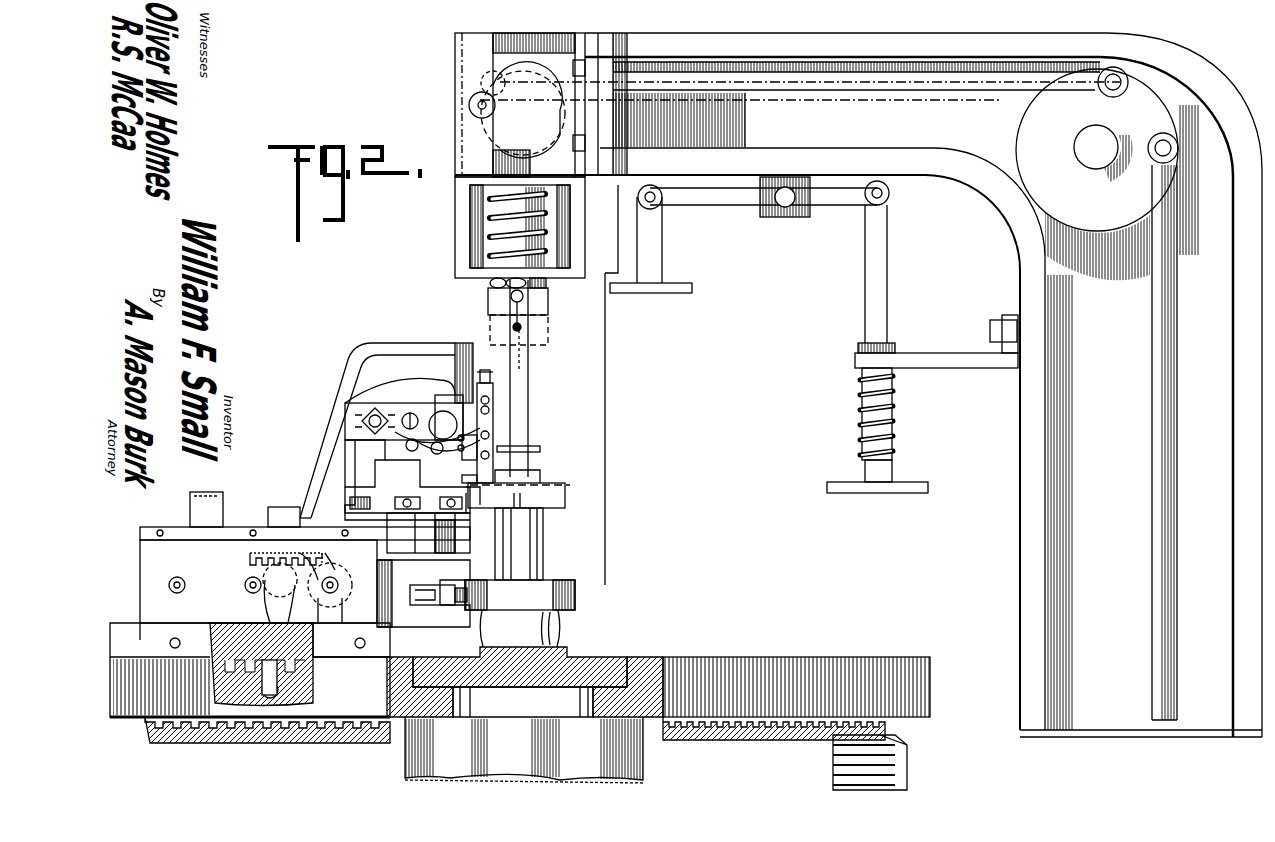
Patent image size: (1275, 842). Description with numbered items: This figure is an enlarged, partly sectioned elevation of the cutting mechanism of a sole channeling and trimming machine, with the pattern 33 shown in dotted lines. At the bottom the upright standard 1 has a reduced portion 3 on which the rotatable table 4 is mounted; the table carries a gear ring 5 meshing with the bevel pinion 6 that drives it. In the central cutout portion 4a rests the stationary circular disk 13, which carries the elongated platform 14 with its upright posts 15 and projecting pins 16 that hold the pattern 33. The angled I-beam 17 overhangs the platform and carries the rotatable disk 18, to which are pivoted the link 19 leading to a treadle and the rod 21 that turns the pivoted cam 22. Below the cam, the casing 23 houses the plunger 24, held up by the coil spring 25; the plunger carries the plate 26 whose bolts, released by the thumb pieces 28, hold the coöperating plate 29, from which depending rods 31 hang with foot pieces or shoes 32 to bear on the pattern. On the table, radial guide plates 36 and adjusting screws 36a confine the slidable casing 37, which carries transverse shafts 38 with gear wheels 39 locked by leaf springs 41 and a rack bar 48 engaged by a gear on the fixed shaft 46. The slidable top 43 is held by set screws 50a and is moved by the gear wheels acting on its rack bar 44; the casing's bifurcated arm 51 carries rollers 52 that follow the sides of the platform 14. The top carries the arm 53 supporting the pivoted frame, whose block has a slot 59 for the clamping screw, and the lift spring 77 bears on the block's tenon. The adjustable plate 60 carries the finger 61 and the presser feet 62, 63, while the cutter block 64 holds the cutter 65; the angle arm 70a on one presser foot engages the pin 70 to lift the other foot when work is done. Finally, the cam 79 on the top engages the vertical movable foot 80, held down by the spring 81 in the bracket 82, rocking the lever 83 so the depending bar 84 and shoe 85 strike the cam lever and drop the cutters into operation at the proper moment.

The upright standard 1 is at (480, 755).
The reduced portion 3 is at (490, 687).
The rotatable table 4 is at (632, 22).
The central cutout portion 4a is at (640, 660).
The gear ring 5 is at (720, 745).
The bevel pinion 6 is at (830, 758).
The circular disk 13 is at (580, 660).
The elongated platform 14 is at (560, 590).
The upright posts 15 is at (525, 540).
The projecting pins 16 is at (520, 497).
The angled I-beam 17 is at (830, 53).
The rotatable disk 18 is at (1022, 140).
The link 19 is at (1173, 330).
The rod 21 is at (835, 90).
The pivoted cam 22 is at (520, 105).
The casing 23 is at (470, 212).
The plunger 24 is at (495, 246).
The coil spring 25 is at (548, 218).
The plate 26 is at (548, 298).
The thumb pieces 28 is at (500, 308).
The coöperating plate 29 is at (548, 315).
The depending rod 31 is at (530, 362).
The foot piece or shoe 32 is at (530, 448).
The pattern 33 is at (560, 482).
The guide plates 36 is at (195, 657).
The adjusting screws 36a is at (160, 640).
The slidable casing 37 is at (258, 581).
The transverse shafts 38 is at (253, 592).
The gear wheel 39 is at (375, 570).
The leaf spring 41 is at (318, 600).
The slidable top 43 is at (190, 540).
The rack bar 44 is at (305, 550).
The fixed shaft 46 is at (290, 690).
The rack bar 48 is at (215, 640).
The set screws 50a is at (255, 530).
The bifurcated arm 51 is at (423, 595).
The rollers 52 is at (435, 598).
The arm 53 is at (342, 415).
The slot 59 is at (385, 400).
The adjustable plate 60 is at (409, 428).
The finger 61 is at (425, 455).
The presser foot 62 is at (445, 400).
The presser foot 63 is at (495, 388).
The cutter block 64 is at (398, 412).
The cutter 65 is at (465, 470).
The pin 70 is at (450, 440).
The angle arm 70a is at (480, 438).
The lift spring 77 is at (352, 468).
The cam 79 is at (205, 492).
The vertical movable foot 80 is at (895, 493).
The spring 81 is at (895, 418).
The bracket 82 is at (925, 355).
The lever 83 is at (750, 200).
The depending bar 84 is at (652, 255).
The shoe 85 is at (670, 295).